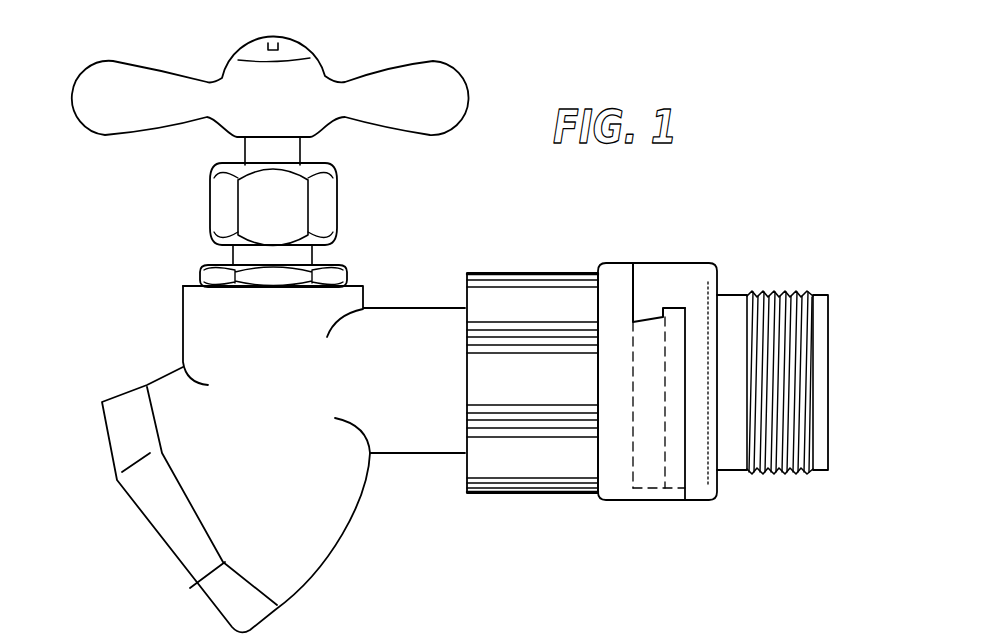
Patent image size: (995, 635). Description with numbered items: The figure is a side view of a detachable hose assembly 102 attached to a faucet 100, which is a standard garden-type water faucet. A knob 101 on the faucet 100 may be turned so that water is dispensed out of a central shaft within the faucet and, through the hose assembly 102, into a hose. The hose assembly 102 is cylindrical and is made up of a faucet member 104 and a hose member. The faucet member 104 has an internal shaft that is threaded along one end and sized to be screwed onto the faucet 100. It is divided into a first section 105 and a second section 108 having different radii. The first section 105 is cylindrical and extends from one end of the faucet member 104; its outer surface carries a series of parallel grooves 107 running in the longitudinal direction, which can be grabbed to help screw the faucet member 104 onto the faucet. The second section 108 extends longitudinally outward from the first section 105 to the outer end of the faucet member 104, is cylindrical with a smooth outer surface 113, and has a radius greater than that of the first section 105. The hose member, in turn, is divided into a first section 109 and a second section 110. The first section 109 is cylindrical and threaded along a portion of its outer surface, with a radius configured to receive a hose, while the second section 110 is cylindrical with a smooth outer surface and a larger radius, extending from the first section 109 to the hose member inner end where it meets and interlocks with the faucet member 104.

The faucet 100 is at (128, 231).
The knob 101 is at (322, 70).
The detachable hose assembly 102 is at (787, 196).
The faucet member 104 is at (551, 497).
The first section 105 is at (524, 262).
The grooves 107 is at (490, 433).
The second section 108 is at (619, 252).
The first section 109 is at (794, 264).
The second section 110 is at (672, 245).
The smooth outer surface 113 is at (622, 500).